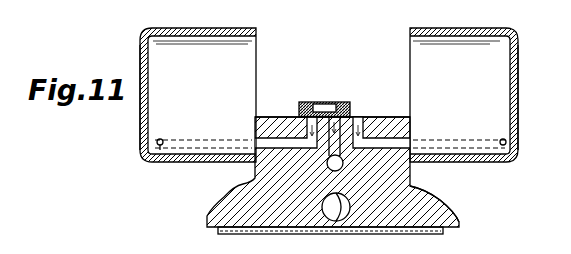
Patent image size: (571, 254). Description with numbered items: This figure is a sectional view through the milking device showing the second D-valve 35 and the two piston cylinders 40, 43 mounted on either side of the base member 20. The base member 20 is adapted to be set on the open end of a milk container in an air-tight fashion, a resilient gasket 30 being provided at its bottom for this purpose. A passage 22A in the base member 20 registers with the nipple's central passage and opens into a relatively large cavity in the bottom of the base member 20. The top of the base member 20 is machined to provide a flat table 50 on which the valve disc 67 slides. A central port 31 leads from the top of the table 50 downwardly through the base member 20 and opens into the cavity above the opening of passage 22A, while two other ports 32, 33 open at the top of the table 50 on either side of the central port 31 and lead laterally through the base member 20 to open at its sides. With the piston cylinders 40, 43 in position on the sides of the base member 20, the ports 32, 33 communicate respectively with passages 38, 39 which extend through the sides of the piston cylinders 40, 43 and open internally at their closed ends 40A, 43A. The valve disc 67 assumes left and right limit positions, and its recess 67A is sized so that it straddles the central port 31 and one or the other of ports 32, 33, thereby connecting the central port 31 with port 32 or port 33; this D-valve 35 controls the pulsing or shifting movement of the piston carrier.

The piston cylinder 43 is at (165, 28).
The closed end of piston cylinder 43A is at (145, 50).
The passage 39 is at (197, 140).
The table 50 is at (264, 117).
The valve disc 67 is at (306, 102).
The recess 67A is at (334, 102).
The D-valve 35 is at (362, 97).
The port 33 is at (270, 148).
The passage 38 is at (452, 140).
The piston cylinder 40 is at (458, 28).
The closed end of piston cylinder 40A is at (518, 70).
The port 32 is at (411, 182).
The base member 20 is at (445, 213).
The resilient gasket 30 is at (442, 233).
The central port 31 is at (343, 170).
The passage 22A is at (324, 221).